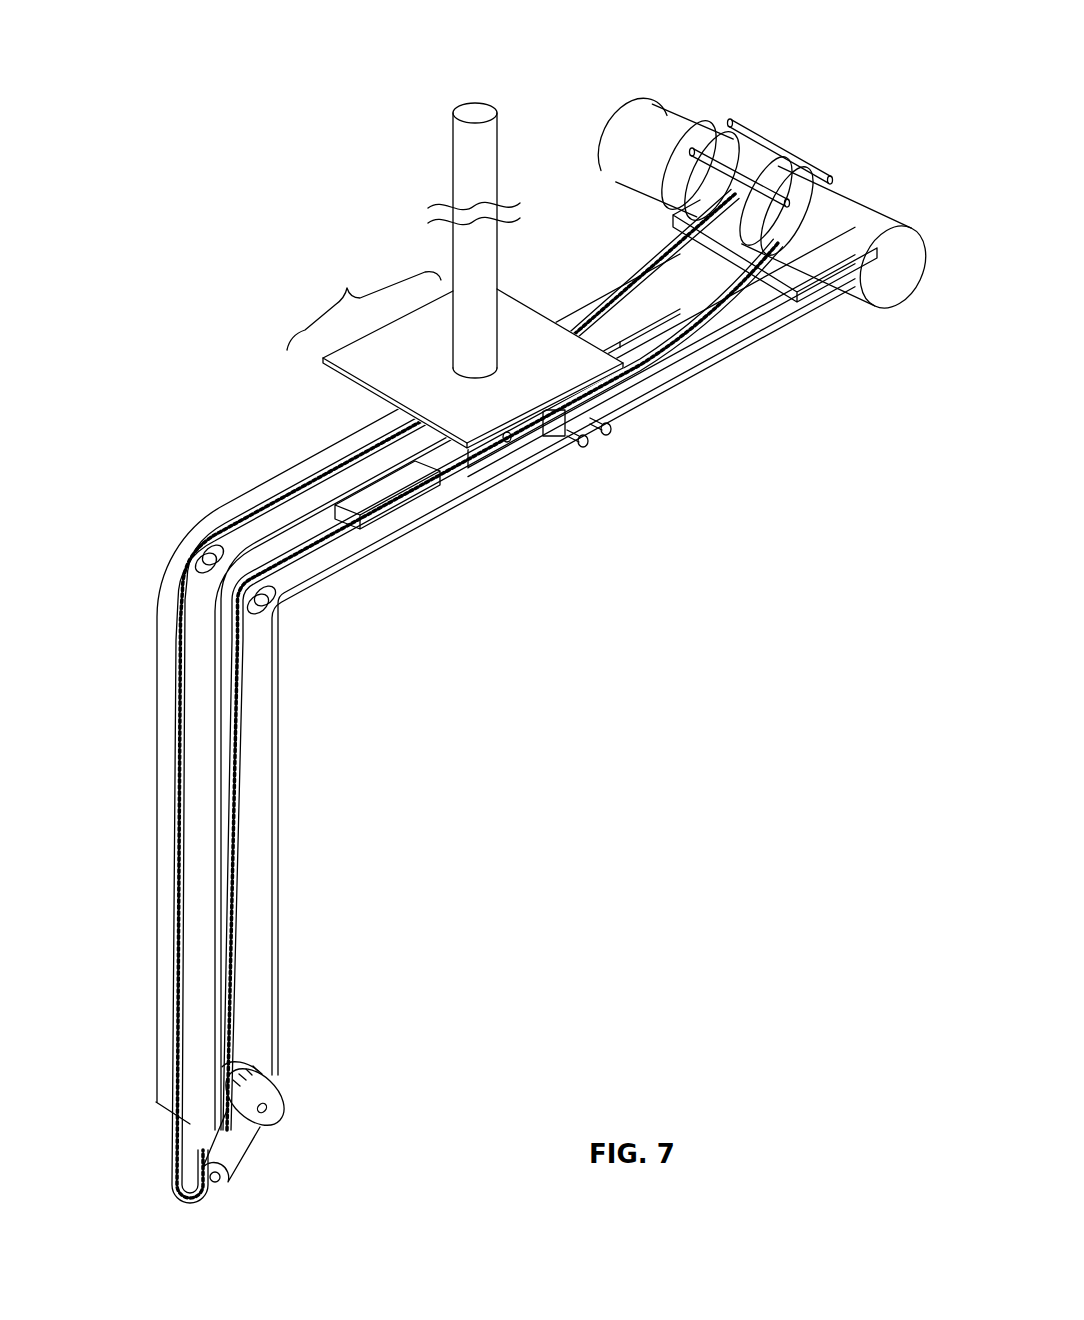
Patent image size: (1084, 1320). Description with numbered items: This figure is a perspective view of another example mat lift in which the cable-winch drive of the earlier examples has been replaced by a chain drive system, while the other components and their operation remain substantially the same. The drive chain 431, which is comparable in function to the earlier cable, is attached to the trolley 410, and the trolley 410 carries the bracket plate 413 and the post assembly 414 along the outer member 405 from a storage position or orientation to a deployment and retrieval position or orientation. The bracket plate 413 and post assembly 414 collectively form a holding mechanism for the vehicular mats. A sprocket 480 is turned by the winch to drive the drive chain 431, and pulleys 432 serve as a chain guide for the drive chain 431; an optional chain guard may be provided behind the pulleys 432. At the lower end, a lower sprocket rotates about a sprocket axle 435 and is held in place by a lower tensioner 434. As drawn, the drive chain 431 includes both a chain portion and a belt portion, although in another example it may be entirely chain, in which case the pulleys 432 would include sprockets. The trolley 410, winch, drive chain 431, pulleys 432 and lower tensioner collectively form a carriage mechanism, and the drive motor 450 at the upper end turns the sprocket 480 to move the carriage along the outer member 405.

The outer member 405 is at (285, 835).
The trolley 410 is at (343, 272).
The bracket plate 413 is at (443, 343).
The post assembly 414 is at (477, 92).
The drive chain 431 is at (170, 1046).
The pulleys 432 is at (183, 544).
The lower tensioner 434 is at (270, 1133).
The sprocket axle 435 is at (230, 1180).
The motor 450 is at (928, 225).
The sprocket 480 is at (773, 158).